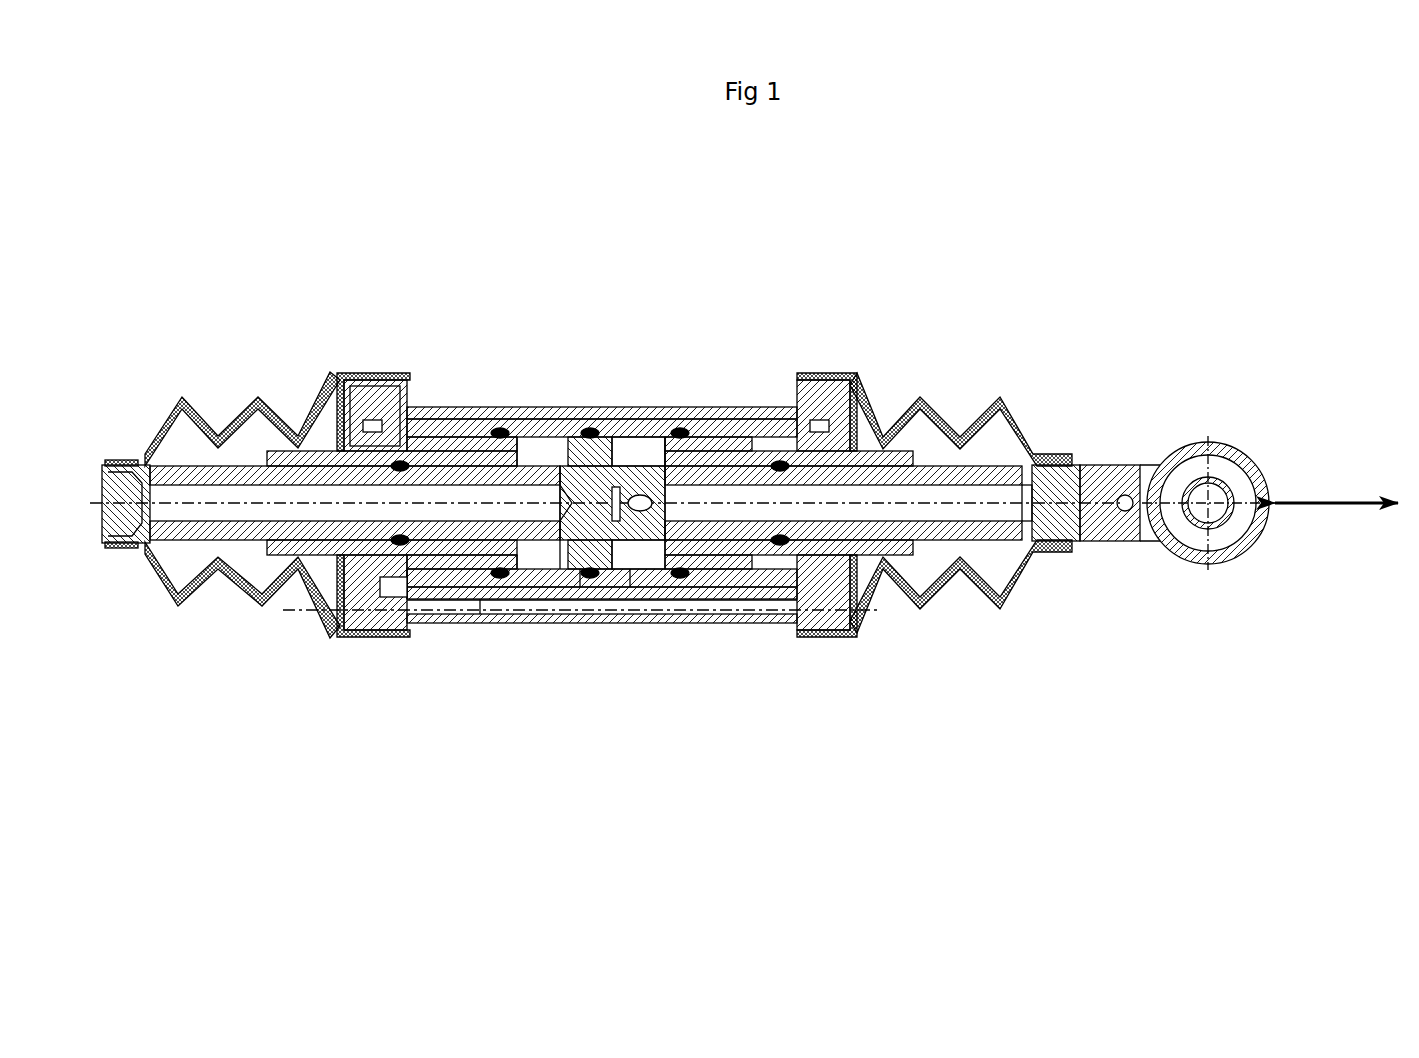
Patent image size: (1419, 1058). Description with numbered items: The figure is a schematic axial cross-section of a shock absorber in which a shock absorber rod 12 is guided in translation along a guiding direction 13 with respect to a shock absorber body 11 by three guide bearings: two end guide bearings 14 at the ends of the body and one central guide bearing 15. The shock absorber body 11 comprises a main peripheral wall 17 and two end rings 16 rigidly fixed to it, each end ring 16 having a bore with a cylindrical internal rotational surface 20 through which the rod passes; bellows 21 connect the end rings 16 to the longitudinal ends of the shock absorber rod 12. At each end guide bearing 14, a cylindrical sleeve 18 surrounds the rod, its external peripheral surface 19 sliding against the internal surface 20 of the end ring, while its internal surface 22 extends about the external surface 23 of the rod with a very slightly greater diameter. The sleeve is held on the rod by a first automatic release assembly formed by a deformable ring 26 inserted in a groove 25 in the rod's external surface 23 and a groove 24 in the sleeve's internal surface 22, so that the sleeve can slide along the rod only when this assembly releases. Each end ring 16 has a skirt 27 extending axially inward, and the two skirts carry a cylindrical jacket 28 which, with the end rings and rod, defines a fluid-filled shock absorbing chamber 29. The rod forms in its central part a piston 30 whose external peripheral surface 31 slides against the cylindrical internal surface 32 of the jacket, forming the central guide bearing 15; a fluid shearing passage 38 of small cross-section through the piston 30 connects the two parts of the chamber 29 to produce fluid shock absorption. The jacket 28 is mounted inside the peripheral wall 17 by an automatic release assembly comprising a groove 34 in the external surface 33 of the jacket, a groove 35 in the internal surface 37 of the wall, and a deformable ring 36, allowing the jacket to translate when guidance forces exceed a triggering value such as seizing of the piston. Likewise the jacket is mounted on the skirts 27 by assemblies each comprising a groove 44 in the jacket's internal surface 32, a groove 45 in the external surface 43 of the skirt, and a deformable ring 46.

The shock absorber body 11 is at (790, 407).
The shock absorber rod 12 is at (950, 540).
The guiding direction 13 is at (1335, 508).
The end guide bearing 14 is at (350, 440).
The central guide bearing 15 is at (598, 397).
The end ring 16 is at (835, 385).
The main peripheral wall 17 is at (625, 466).
The cylindrical sleeve 18 is at (295, 432).
The external peripheral surface 19 is at (277, 565).
The cylindrical internal rotational surface 20 is at (760, 407).
The bellows 21 is at (1027, 395).
The internal surface 22 is at (335, 455).
The external surface 23 is at (228, 466).
The groove 24 is at (375, 432).
The groove 25 is at (380, 555).
The deformable ring 26 is at (400, 461).
The skirt 27 is at (450, 569).
The cylindrical jacket 28 is at (675, 437).
The shock absorbing chamber 29 is at (560, 445).
The piston 30 is at (585, 569).
The external peripheral surface 31 is at (575, 466).
The cylindrical internal surface 32 is at (640, 437).
The external surface 33 is at (520, 599).
The groove 34 is at (630, 569).
The groove 35 is at (600, 587).
The deformable ring 36 is at (585, 437).
The internal surface 37 is at (702, 623).
The fluid shearing passage 38 is at (560, 569).
The external surface 43 is at (415, 599).
The groove 44 is at (500, 578).
The groove 45 is at (480, 599).
The deformable ring 46 is at (500, 428).